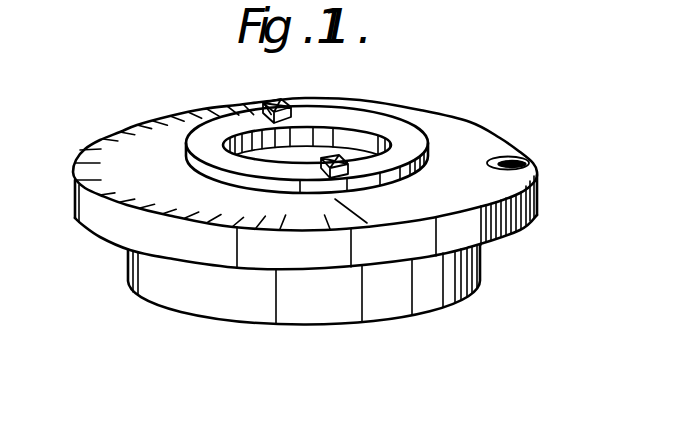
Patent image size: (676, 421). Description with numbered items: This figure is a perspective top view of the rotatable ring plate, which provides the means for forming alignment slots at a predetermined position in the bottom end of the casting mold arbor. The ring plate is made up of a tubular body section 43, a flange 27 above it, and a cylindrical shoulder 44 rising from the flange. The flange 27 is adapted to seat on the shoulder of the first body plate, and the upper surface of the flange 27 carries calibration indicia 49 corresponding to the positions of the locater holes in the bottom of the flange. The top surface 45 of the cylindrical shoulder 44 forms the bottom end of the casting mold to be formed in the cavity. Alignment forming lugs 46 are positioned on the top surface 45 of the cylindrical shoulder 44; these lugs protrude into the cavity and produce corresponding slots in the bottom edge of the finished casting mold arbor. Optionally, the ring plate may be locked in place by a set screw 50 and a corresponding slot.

The flange 27 is at (490, 143).
The tubular body section 43 is at (347, 312).
The cylindrical shoulder 44 is at (428, 158).
The top surface 45 is at (392, 133).
The alignment forming lugs 46 is at (336, 158).
The calibration indicia 49 is at (94, 168).
The set screw 50 is at (517, 164).